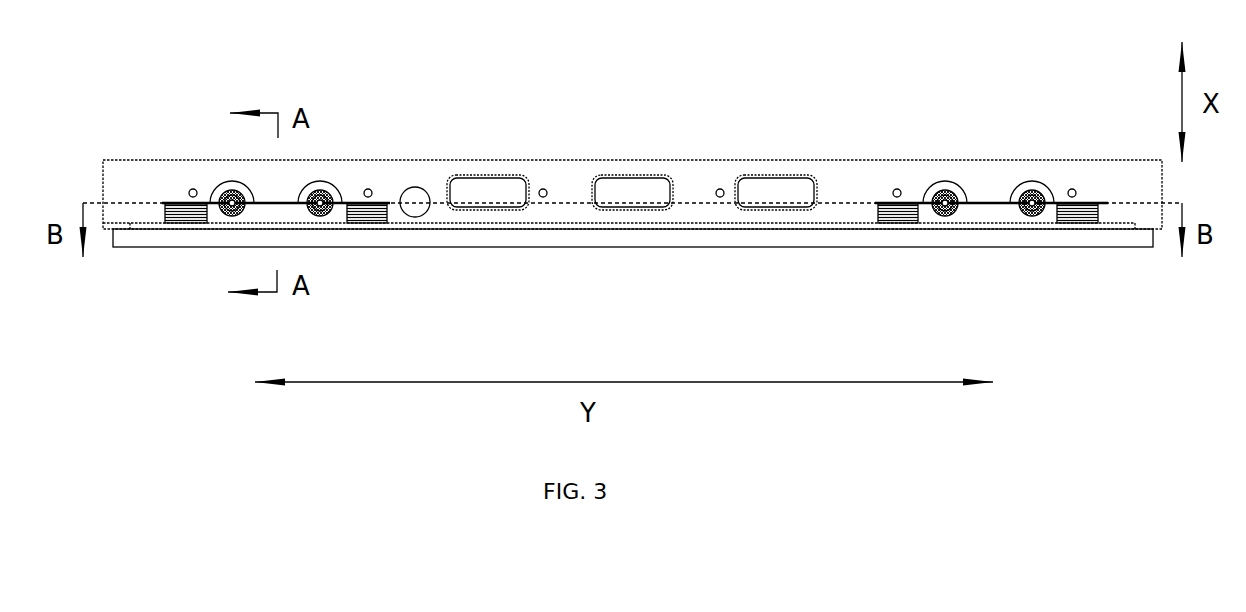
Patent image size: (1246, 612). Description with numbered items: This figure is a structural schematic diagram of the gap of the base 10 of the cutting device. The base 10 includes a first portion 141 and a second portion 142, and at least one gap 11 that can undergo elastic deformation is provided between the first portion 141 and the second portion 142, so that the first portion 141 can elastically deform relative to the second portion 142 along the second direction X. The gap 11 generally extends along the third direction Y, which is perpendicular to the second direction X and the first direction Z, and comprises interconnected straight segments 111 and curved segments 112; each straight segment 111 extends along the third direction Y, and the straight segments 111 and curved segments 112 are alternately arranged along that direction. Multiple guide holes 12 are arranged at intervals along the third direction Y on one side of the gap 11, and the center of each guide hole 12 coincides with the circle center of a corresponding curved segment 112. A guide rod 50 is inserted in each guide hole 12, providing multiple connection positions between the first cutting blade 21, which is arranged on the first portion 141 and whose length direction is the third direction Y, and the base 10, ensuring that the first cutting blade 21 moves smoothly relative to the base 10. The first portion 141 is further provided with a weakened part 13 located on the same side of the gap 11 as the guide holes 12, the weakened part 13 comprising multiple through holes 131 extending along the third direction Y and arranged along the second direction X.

The base 10 is at (583, 160).
The gap 11 is at (962, 198).
The guide hole 12 is at (218, 213).
The weakened part 13 is at (404, 215).
The through hole 131 is at (388, 212).
The first cutting blade 21 is at (707, 240).
The guide rod 50 is at (232, 205).
The straight segment 111 is at (178, 200).
The curved segment 112 is at (233, 185).
The first portion 141 is at (268, 216).
The second portion 142 is at (266, 172).